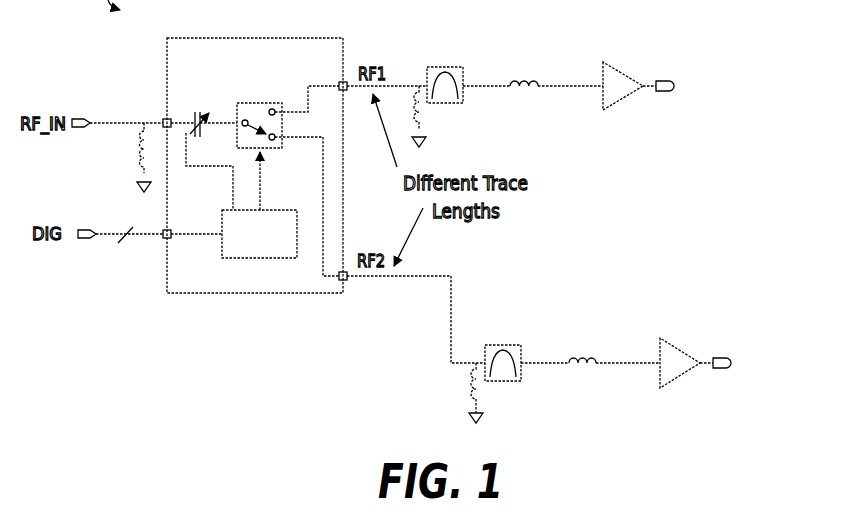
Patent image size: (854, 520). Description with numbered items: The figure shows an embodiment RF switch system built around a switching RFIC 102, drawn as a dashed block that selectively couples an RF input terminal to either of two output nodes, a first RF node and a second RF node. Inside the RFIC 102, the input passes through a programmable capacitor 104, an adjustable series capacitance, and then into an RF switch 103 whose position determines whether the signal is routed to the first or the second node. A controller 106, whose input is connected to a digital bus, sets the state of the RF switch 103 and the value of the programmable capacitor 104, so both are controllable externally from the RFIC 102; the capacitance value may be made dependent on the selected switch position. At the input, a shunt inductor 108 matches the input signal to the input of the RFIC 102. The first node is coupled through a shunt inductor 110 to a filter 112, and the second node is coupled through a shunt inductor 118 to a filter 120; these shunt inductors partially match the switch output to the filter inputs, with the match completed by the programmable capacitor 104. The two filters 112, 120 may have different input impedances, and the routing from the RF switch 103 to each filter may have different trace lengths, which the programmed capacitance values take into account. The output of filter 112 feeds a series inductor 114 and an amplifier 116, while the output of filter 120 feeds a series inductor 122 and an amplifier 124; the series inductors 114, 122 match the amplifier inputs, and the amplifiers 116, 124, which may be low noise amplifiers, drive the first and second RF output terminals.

The switching RFIC 102 is at (249, 37).
The RF switch 103 is at (261, 105).
The programmable capacitor 104 is at (192, 114).
The controller 106 is at (221, 212).
The shunt inductor 108 is at (137, 160).
The shunt inductor 110 is at (424, 122).
The filter 112 is at (438, 67).
The series inductor 114 is at (521, 79).
The amplifier 116 is at (601, 70).
The shunt inductor 118 is at (467, 390).
The filter 120 is at (505, 344).
The series inductor 122 is at (584, 358).
The amplifier 124 is at (659, 345).